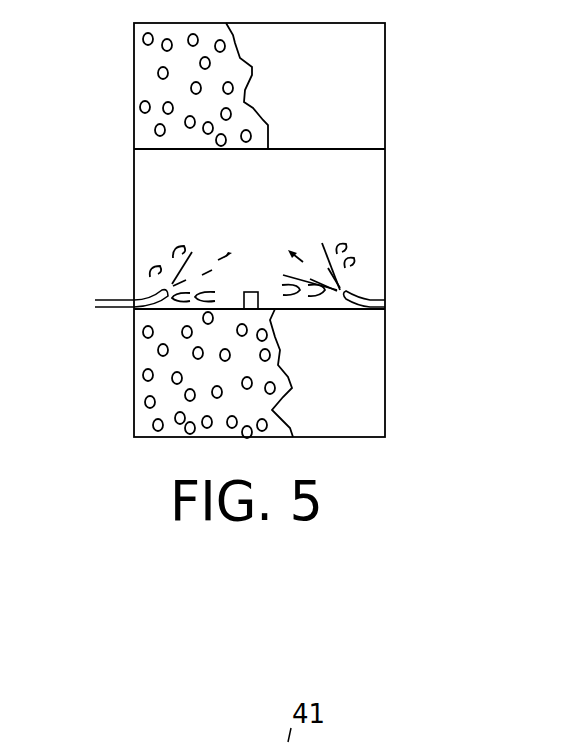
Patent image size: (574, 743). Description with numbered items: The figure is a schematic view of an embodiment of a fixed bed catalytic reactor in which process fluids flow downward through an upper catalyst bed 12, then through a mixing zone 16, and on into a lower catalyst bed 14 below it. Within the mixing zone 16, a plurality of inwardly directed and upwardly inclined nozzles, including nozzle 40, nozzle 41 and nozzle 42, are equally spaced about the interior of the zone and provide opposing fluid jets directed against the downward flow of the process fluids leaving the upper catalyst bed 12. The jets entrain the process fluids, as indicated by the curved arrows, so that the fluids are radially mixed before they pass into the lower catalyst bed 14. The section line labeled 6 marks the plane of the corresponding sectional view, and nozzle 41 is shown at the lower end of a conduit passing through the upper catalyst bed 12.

The section line 6- 6 is at (418, 165).
The upper catalyst bed 12 is at (163, 87).
The lower catalyst bed 14 is at (168, 388).
The mixing zone 16 is at (363, 213).
The nozzle 40 is at (135, 291).
The nozzle 41 is at (258, 300).
The nozzle 42 is at (386, 296).